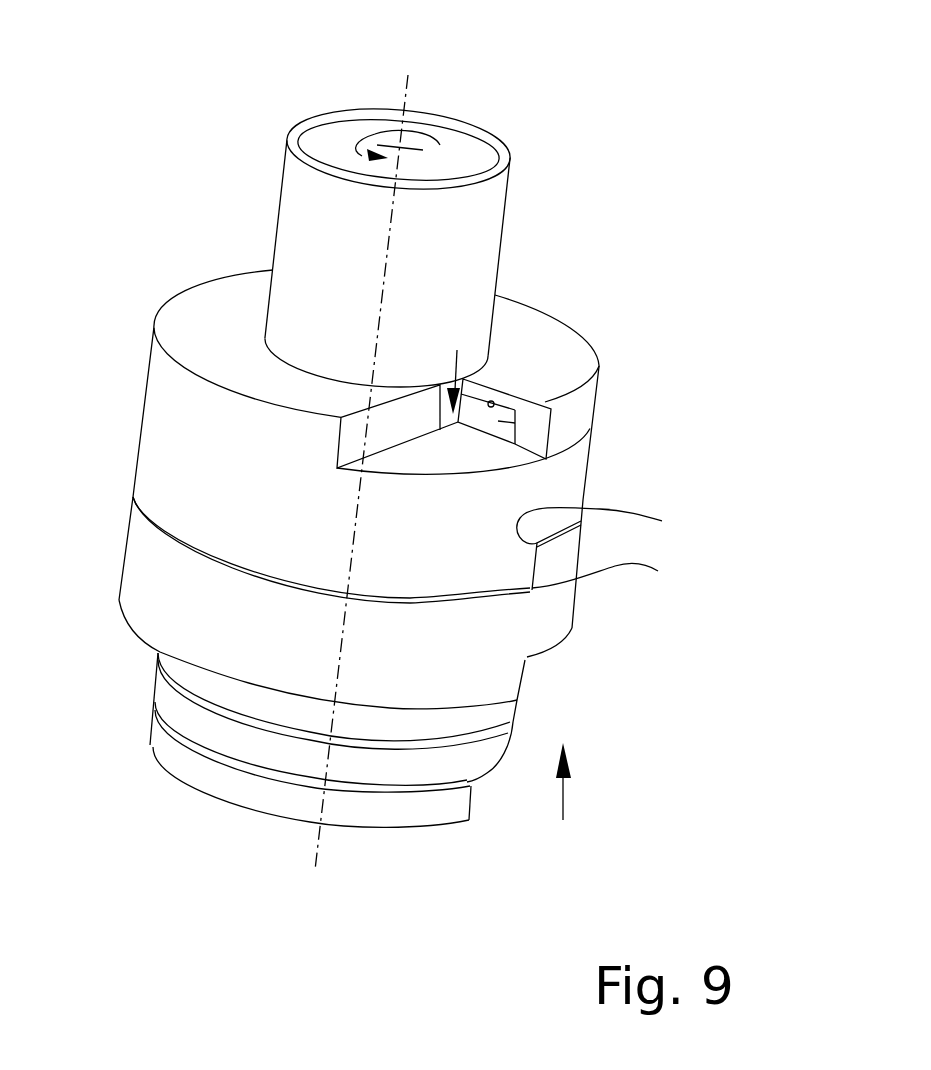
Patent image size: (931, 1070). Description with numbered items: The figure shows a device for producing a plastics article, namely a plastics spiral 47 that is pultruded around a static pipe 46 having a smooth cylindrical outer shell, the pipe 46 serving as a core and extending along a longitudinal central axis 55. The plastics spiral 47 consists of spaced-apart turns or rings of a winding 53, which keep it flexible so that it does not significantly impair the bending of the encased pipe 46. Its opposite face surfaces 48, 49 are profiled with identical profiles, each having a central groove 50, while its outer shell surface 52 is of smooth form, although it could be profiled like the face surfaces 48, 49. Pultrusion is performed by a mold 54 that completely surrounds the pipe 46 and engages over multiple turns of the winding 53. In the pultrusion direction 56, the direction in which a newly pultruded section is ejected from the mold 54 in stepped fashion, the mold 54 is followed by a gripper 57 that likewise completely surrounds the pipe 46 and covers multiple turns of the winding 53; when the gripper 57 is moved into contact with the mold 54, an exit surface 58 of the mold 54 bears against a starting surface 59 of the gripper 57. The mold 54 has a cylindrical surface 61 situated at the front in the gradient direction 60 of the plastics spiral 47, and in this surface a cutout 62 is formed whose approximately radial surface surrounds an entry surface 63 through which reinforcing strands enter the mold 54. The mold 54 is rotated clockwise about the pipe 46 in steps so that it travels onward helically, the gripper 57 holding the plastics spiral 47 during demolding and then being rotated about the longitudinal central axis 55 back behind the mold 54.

The pipe 46 is at (487, 220).
The plastics spiral 47 is at (493, 752).
The face surface 48 is at (516, 408).
The face surface 49 is at (497, 480).
The central groove 50 is at (493, 401).
The outer shell surface 52 is at (428, 813).
The winding 53 is at (190, 677).
The mold 54 is at (573, 458).
The longitudinal central axis 55 is at (317, 853).
The pultrusion direction 56 is at (380, 132).
The gripper 57 is at (550, 607).
The exit surface 58 is at (603, 526).
The starting surface 59 is at (607, 555).
The gradient direction 60 is at (563, 799).
The cylindrical surface 61 is at (503, 405).
The cutout 62 is at (457, 350).
The entry surface 63 is at (533, 414).